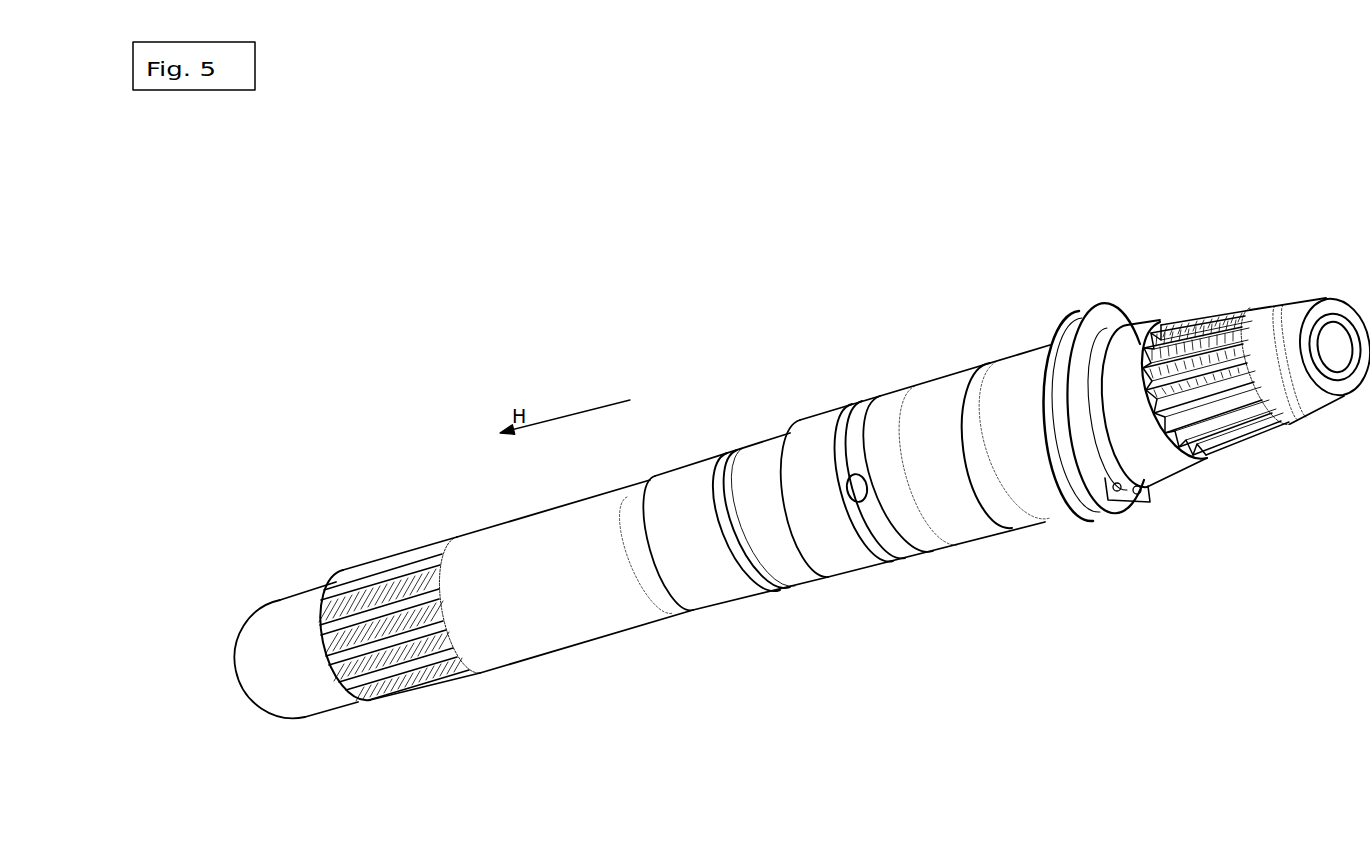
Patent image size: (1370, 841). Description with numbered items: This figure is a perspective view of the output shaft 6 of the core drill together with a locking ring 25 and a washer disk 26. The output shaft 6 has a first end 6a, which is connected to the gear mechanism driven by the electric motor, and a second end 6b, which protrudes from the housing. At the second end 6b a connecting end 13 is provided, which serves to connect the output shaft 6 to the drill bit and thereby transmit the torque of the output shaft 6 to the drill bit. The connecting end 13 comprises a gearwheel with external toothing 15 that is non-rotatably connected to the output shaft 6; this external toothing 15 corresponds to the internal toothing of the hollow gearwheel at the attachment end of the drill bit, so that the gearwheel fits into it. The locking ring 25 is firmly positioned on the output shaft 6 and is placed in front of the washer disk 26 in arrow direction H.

The output shaft 6 is at (600, 617).
The first end 6a is at (297, 615).
The second end 6b is at (1064, 500).
The connecting end 13 is at (1270, 322).
The external toothing 15 is at (1247, 443).
The locking ring 25 is at (1101, 325).
The washer disk 26 is at (1167, 498).